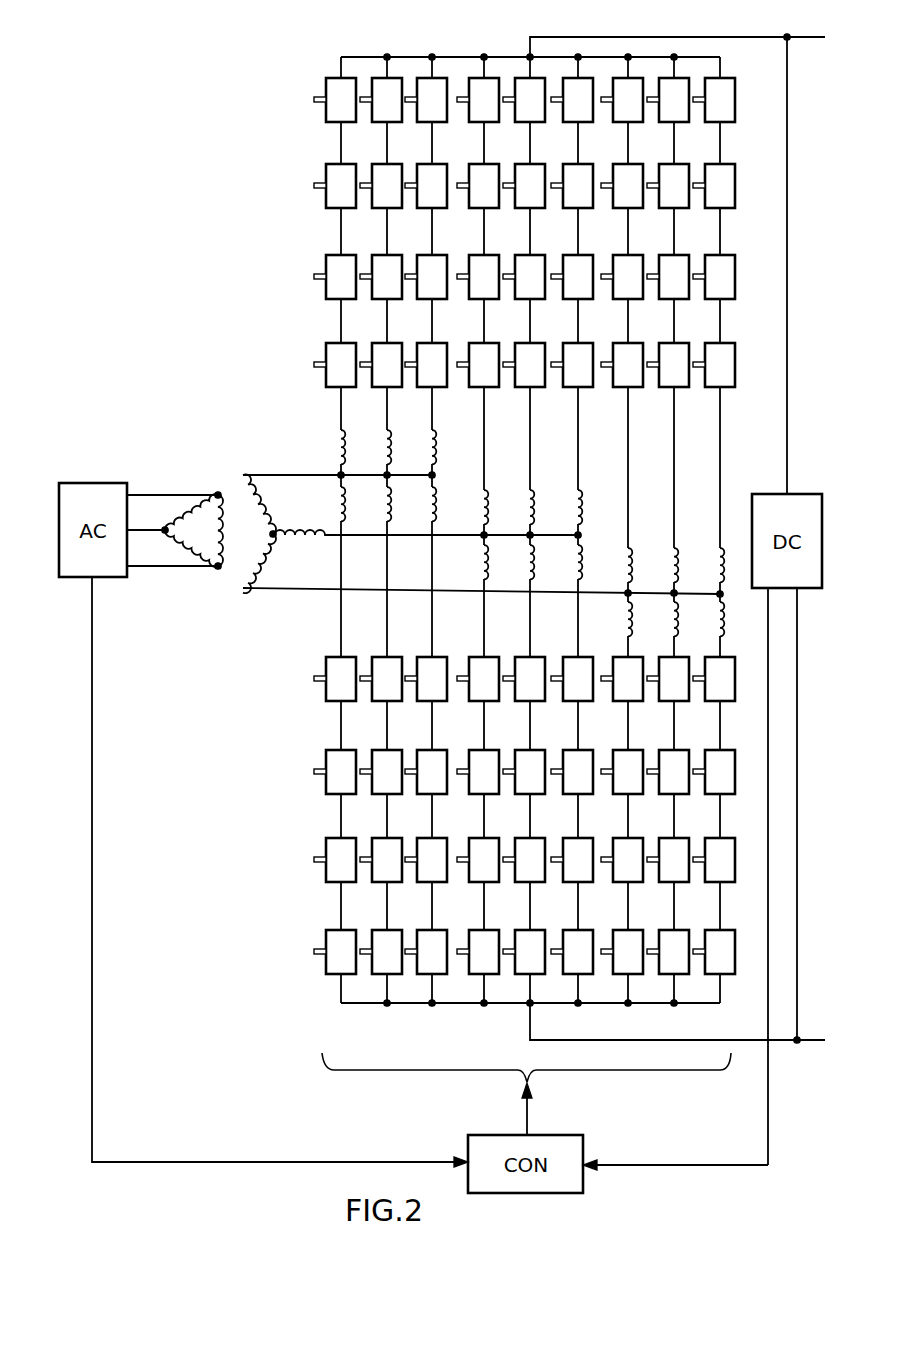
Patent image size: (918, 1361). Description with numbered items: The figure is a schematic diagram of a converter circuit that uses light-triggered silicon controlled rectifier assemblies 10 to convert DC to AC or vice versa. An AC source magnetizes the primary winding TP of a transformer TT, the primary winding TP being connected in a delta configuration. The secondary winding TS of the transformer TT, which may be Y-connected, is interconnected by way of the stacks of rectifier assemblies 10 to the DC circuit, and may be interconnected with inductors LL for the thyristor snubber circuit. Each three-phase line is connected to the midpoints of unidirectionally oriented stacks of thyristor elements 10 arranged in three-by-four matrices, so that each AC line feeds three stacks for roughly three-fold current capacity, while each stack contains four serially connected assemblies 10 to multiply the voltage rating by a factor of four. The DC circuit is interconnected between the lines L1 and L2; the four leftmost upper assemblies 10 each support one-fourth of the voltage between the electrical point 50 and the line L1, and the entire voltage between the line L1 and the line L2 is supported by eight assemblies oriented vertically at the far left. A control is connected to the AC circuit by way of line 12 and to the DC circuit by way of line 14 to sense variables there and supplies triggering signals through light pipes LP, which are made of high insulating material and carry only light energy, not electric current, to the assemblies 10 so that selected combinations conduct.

The silicon controlled rectifier assembly 10 is at (333, 77).
The light pipe LP is at (321, 100).
The inductor LL is at (337, 447).
The electrical point 50 is at (340, 474).
The primary winding TP is at (210, 543).
The transformer TT is at (256, 544).
The secondary winding TS is at (302, 562).
The line L1 is at (778, 40).
The line L2 is at (778, 1046).
The line 12 is at (430, 1162).
The line 14 is at (678, 1162).